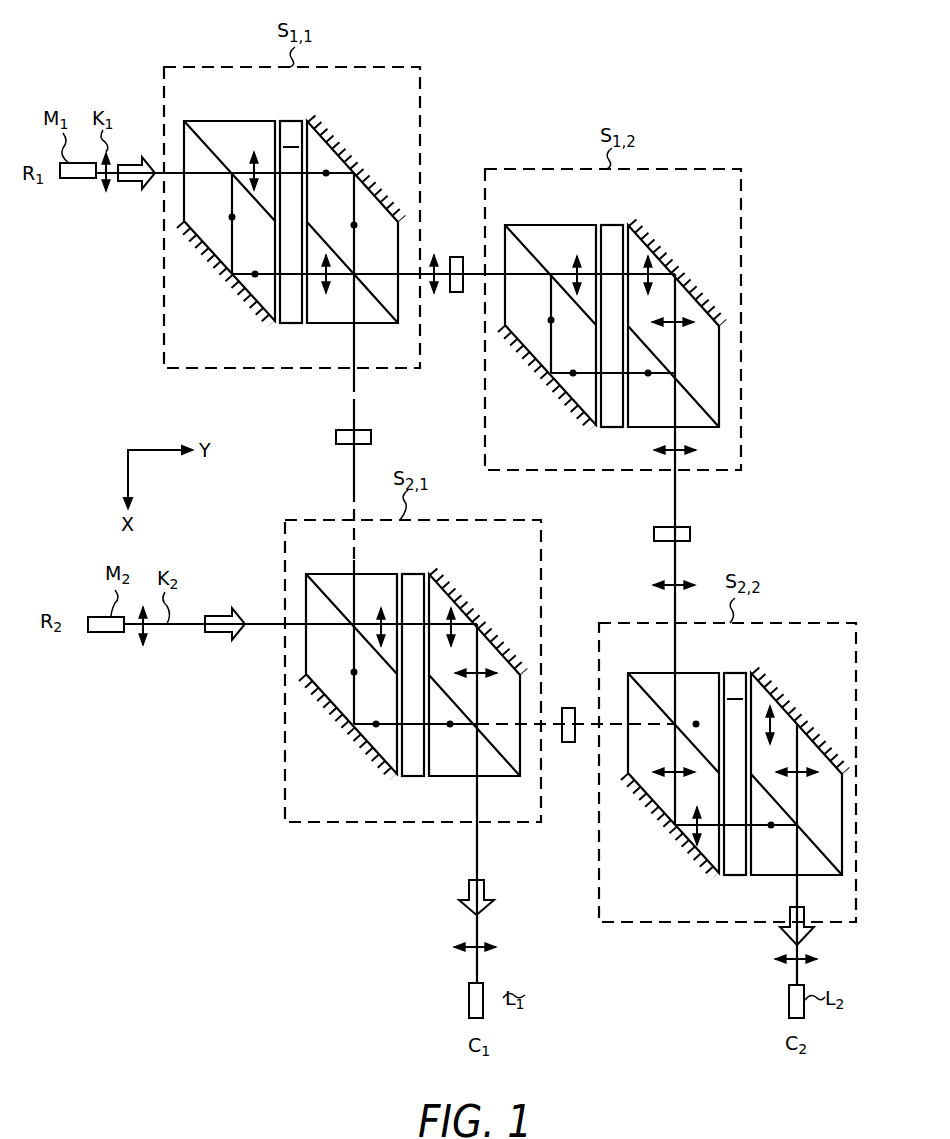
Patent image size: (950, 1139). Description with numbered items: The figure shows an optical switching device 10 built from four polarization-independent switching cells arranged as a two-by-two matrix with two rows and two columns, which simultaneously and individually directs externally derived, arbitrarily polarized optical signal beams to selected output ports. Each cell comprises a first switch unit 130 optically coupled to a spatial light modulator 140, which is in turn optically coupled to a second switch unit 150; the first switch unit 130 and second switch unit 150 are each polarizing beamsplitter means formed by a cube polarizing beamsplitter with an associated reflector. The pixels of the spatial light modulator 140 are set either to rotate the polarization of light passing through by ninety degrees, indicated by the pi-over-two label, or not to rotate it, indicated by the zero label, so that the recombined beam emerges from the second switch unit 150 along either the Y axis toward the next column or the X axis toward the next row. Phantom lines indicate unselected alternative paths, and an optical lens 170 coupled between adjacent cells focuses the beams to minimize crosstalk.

The optical switching device 10 is at (521, 67).
The first switch unit 130 is at (414, 498).
The spatial light modulator 140 is at (517, 477).
The second switch unit 150 is at (576, 496).
The optical lens 170 is at (547, 473).